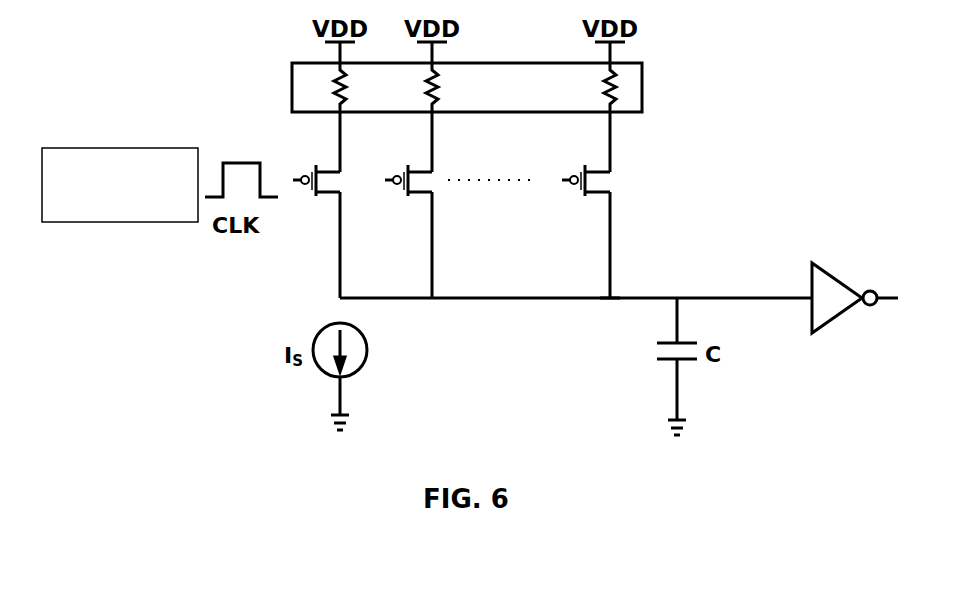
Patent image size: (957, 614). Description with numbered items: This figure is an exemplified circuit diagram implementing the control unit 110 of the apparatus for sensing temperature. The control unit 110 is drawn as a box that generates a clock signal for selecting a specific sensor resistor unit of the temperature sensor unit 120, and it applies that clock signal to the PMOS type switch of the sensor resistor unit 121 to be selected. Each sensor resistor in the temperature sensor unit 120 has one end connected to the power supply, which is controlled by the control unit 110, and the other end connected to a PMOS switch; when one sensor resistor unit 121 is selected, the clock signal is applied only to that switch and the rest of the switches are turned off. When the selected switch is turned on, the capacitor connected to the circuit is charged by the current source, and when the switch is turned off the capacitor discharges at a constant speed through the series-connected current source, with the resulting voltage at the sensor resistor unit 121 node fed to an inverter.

The control unit 110 is at (168, 222).
The temperature sensor unit 120 is at (277, 62).
The sensor resistor unit 121 is at (610, 300).